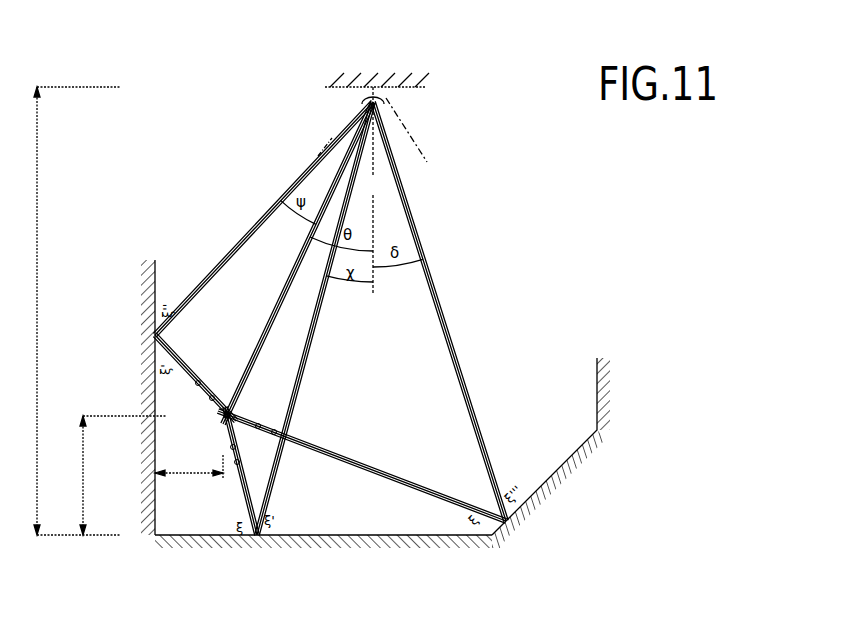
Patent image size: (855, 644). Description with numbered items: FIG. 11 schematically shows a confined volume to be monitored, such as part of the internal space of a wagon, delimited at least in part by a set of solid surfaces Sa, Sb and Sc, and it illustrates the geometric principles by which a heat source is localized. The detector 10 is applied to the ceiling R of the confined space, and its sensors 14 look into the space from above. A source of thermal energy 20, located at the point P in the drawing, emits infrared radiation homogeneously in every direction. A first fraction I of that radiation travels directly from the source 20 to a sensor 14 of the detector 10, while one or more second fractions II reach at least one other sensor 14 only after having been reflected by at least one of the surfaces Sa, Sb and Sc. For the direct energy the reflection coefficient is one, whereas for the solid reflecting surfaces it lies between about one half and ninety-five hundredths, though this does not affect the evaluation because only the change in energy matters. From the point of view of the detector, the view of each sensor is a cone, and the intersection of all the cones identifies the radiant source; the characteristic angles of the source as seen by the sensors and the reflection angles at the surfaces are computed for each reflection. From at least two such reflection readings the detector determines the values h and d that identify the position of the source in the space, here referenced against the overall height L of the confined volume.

The sensor 14 is at (358, 101).
The detector 10 is at (391, 96).
The source of thermal energy 20 is at (212, 419).
The ceiling R is at (405, 92).
The first fraction of the infrared radiation I is at (284, 274).
The second fractions of the infrared radiation II is at (215, 256).
The target point P is at (250, 400).
The solid surface Sa is at (547, 470).
The solid surface Sb is at (340, 535).
The solid surface Sc is at (156, 272).
The height dimension L is at (65, 311).
The h value h is at (107, 475).
The d value d is at (189, 461).